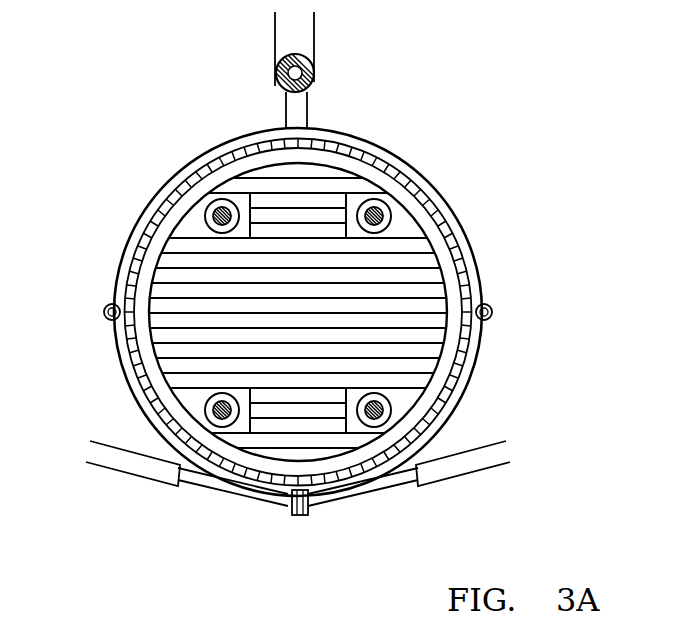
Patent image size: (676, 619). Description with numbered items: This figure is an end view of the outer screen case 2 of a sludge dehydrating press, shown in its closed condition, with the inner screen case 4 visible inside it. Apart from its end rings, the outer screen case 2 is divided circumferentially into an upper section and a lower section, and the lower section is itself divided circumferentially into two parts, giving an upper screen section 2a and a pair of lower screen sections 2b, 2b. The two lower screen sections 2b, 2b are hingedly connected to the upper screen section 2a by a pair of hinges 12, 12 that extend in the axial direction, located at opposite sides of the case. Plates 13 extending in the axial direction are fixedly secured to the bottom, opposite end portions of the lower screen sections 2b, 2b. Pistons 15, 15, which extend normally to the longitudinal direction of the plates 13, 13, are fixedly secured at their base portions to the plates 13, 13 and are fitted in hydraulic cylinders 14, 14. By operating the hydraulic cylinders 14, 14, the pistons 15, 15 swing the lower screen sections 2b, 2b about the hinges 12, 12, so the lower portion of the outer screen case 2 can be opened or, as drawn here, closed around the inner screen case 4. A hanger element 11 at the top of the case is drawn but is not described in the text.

The outer screen case 2 is at (305, 305).
The upper screen section 2a is at (420, 170).
The lower screen section 2b is at (120, 358).
The inner screen case 4 is at (425, 287).
The hanger 11 is at (307, 44).
The hinge 12 is at (104, 311).
The plate 13 is at (296, 514).
The hydraulic cylinder 14 is at (134, 472).
The piston 15 is at (221, 492).